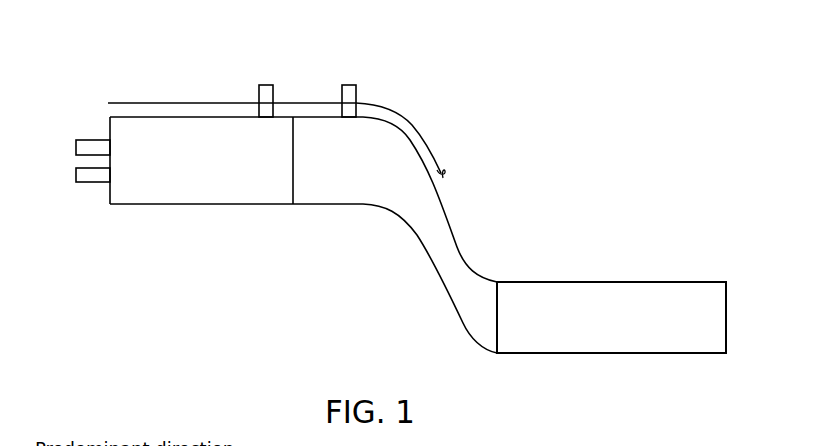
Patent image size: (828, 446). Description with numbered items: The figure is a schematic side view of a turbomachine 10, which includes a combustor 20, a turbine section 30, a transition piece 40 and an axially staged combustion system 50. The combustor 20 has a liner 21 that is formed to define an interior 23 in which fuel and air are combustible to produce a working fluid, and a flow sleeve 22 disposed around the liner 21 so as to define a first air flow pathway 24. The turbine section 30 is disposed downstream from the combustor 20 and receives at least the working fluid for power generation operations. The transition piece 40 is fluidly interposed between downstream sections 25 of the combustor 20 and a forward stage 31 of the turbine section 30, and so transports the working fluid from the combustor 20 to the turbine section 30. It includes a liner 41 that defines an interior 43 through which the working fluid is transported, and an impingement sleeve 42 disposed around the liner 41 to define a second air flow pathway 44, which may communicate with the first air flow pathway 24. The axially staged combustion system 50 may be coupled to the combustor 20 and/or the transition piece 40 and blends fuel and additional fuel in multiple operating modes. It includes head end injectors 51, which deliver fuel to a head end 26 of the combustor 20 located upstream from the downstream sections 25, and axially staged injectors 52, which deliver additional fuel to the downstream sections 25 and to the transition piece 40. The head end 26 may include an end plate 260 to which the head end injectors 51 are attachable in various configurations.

The turbomachine 10 is at (483, 99).
The combustor 20 is at (223, 205).
The liner 21 is at (183, 205).
The flow sleeve 22 is at (200, 103).
The interior 23 is at (212, 172).
The first air flow pathway 24 is at (155, 106).
The downstream sections 25 is at (293, 209).
The head end 26 is at (148, 209).
The end plate 260 is at (110, 193).
The turbine section 30 is at (662, 282).
The forward stage 31 is at (535, 358).
The transition piece 40 is at (466, 332).
The liner 41 is at (388, 212).
The impingement sleeve 42 is at (403, 118).
The interior 43 is at (400, 175).
The second air flow pathway 44 is at (423, 150).
The axially staged combustion system 50 is at (97, 139).
The head end injectors 51 is at (72, 140).
The axially staged injectors 52 is at (355, 73).